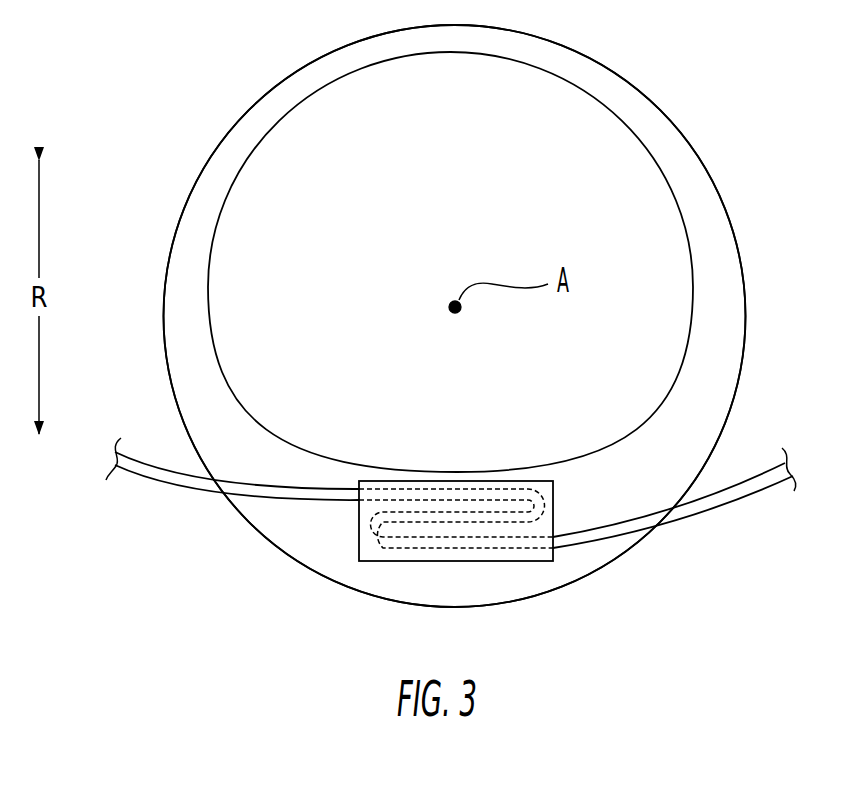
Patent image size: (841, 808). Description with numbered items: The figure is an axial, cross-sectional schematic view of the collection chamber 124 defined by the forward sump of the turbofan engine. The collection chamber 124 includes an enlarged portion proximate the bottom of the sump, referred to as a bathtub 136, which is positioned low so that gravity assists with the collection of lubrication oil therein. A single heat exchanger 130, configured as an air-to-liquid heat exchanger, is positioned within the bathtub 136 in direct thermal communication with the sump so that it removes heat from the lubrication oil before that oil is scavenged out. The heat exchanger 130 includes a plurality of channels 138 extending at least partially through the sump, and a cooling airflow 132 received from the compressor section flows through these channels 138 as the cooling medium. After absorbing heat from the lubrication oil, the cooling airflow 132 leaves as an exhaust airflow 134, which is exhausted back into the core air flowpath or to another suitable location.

The collection chamber 124 is at (193, 357).
The heat exchanger 130 is at (458, 561).
The cooling airflow 132 is at (216, 493).
The exhaust airflow 134 is at (708, 517).
The bathtub 136 is at (327, 532).
The channels 138 is at (413, 545).